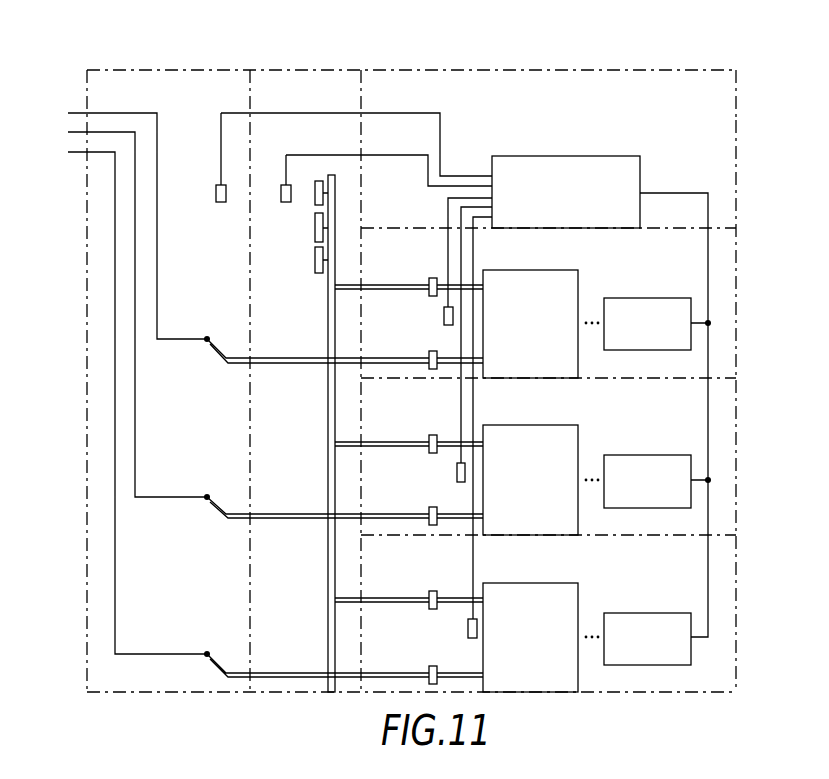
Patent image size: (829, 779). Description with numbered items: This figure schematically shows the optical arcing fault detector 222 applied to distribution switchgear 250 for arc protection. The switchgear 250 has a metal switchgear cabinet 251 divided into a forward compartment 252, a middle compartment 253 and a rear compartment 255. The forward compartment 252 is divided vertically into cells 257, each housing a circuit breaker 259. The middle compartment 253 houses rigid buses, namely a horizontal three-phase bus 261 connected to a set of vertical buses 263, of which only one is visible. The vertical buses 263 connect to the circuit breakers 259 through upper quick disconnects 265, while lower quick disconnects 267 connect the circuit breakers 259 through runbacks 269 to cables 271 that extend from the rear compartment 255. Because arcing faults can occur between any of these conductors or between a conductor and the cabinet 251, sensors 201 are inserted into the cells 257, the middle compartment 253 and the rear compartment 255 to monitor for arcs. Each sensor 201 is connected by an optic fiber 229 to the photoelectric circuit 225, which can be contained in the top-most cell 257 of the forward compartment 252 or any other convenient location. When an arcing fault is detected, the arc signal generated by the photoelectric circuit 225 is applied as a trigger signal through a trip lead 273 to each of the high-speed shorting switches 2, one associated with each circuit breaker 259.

The high-speed shorting switch 2 is at (638, 298).
The sensor 201 is at (219, 205).
The optical arcing fault detector 222 is at (499, 140).
The photoelectric circuit 225 is at (595, 156).
The optic fiber 229 is at (375, 112).
The switchgear 250 is at (552, 55).
The metal switchgear cabinet 251 is at (700, 70).
The forward compartment 252 is at (727, 101).
The middle compartment 253 is at (280, 75).
The rear compartment 255 is at (178, 75).
The cell 257 is at (725, 144).
The circuit breaker 259 is at (548, 270).
The horizontal three-phase bus 261 is at (297, 270).
The vertical bus 263 is at (326, 466).
The upper quick disconnect 265 is at (427, 280).
The lower quick disconnect 267 is at (428, 353).
The runback 269 is at (282, 365).
The cable 271 is at (165, 342).
The trip lead 273 is at (405, 48).